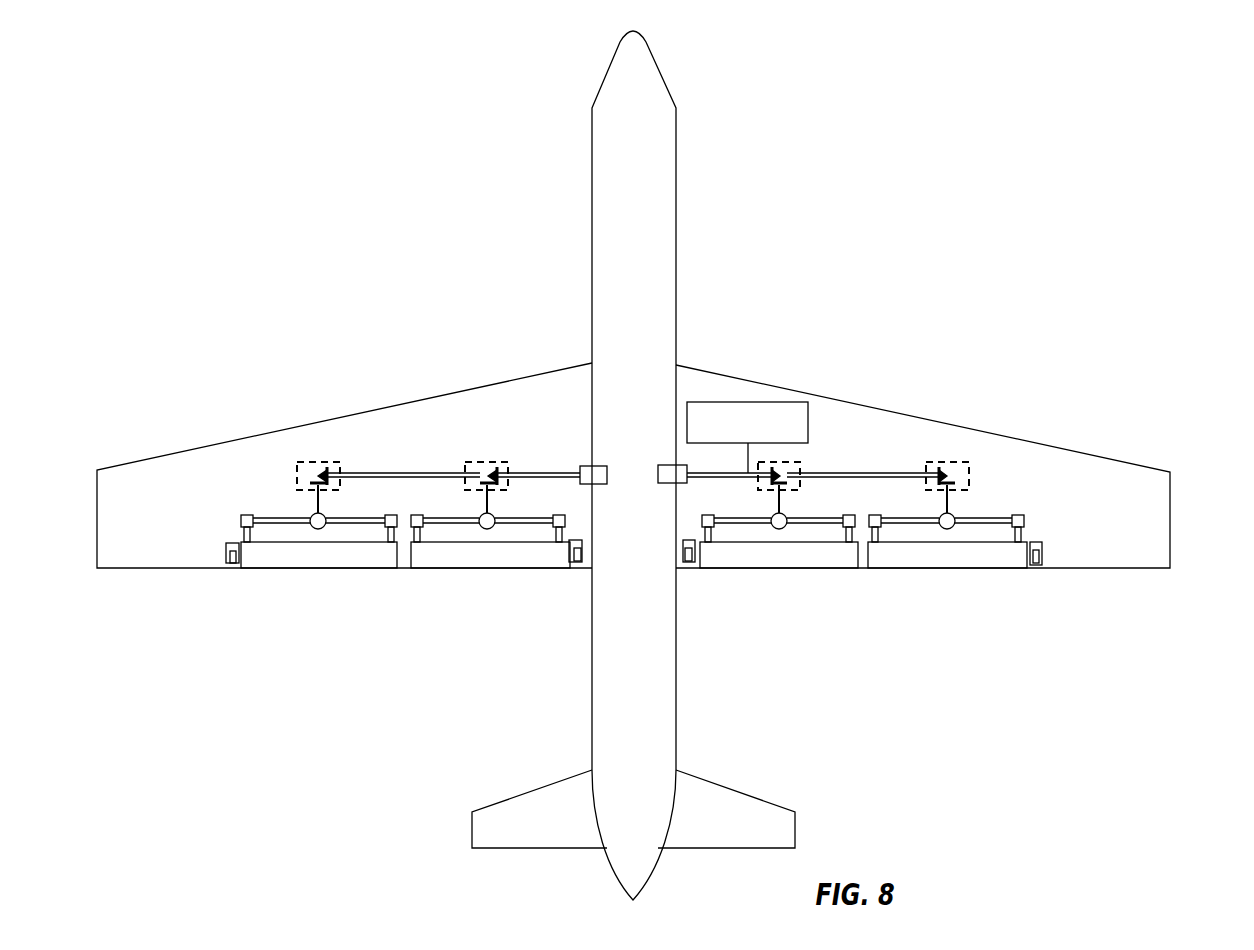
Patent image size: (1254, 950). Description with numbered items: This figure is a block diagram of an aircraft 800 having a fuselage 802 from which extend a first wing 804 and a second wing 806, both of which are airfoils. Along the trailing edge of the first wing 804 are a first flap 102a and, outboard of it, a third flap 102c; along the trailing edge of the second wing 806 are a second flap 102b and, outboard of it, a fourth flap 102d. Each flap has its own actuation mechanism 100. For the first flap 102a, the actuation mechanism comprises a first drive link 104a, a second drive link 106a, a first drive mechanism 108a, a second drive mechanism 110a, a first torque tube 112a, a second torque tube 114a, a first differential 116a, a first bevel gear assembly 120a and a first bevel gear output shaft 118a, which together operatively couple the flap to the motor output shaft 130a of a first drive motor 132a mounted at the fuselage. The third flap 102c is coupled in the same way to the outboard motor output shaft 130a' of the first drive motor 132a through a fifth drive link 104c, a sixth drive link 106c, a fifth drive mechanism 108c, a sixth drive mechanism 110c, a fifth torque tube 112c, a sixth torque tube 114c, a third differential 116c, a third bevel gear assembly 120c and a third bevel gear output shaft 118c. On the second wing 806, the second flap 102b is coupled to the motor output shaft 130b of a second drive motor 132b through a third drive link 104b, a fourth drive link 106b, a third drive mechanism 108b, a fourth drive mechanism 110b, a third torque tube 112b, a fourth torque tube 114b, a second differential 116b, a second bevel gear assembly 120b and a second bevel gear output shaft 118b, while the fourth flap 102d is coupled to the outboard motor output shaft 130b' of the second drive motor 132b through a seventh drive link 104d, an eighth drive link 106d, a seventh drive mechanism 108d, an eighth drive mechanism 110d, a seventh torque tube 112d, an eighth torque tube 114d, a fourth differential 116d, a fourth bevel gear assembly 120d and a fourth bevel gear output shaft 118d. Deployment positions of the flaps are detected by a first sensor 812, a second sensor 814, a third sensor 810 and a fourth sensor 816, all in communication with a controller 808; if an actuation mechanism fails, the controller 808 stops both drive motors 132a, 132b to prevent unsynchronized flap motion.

The aircraft 800 is at (760, 58).
The fuselage 802 is at (665, 148).
The first wing 804 is at (120, 467).
The second wing 806 is at (1162, 471).
The controller 808 is at (813, 402).
The third sensor 810 is at (230, 564).
The first sensor 812 is at (580, 563).
The second sensor 814 is at (688, 563).
The fourth sensor 816 is at (1036, 565).
The actuation mechanism 100 is at (357, 452).
The first flap 102a is at (486, 552).
The second flap 102b is at (760, 554).
The third flap 102c is at (318, 552).
The fourth flap 102d is at (950, 554).
The first drive link 104a is at (418, 542).
The third drive link 104b is at (708, 533).
The fifth drive link 104c is at (244, 532).
The seventh drive link 104d is at (878, 533).
The second drive link 106a is at (563, 531).
The fourth drive link 106b is at (845, 533).
The sixth drive link 106c is at (391, 534).
The eighth drive link 106d is at (1007, 533).
The first drive mechanism 108a is at (421, 517).
The third drive mechanism 108b is at (702, 522).
The fifth drive mechanism 108c is at (241, 516).
The seventh drive mechanism 108d is at (872, 528).
The second drive mechanism 110a is at (566, 516).
The fourth drive mechanism 110b is at (838, 479).
The sixth drive mechanism 110c is at (398, 478).
The eighth drive mechanism 110d is at (1026, 518).
The first torque tube 112a is at (462, 524).
The third torque tube 112b is at (750, 524).
The fifth torque tube 112c is at (268, 517).
The seventh torque tube 112d is at (907, 517).
The second torque tube 114a is at (560, 515).
The fourth torque tube 114b is at (846, 528).
The sixth torque tube 114c is at (342, 518).
The eighth torque tube 114d is at (1015, 515).
The first differential 116a is at (495, 517).
The second differential 116b is at (772, 516).
The third differential 116c is at (310, 516).
The fourth differential 116d is at (955, 515).
The first bevel gear output shaft 118a is at (486, 497).
The second bevel gear output shaft 118b is at (782, 495).
The third bevel gear output shaft 118c is at (312, 494).
The fourth bevel gear output shaft 118d is at (946, 505).
The first bevel gear assembly 120a is at (466, 462).
The second bevel gear assembly 120b is at (795, 462).
The third bevel gear assembly 120c is at (300, 462).
The fourth bevel gear assembly 120d is at (963, 462).
The motor output shaft 130a is at (538, 444).
The motor output shaft 130a' is at (403, 439).
The motor output shaft 130b is at (729, 461).
The motor output shaft 130b' is at (863, 459).
The first drive motor 132a is at (599, 466).
The second drive motor 132b is at (658, 473).